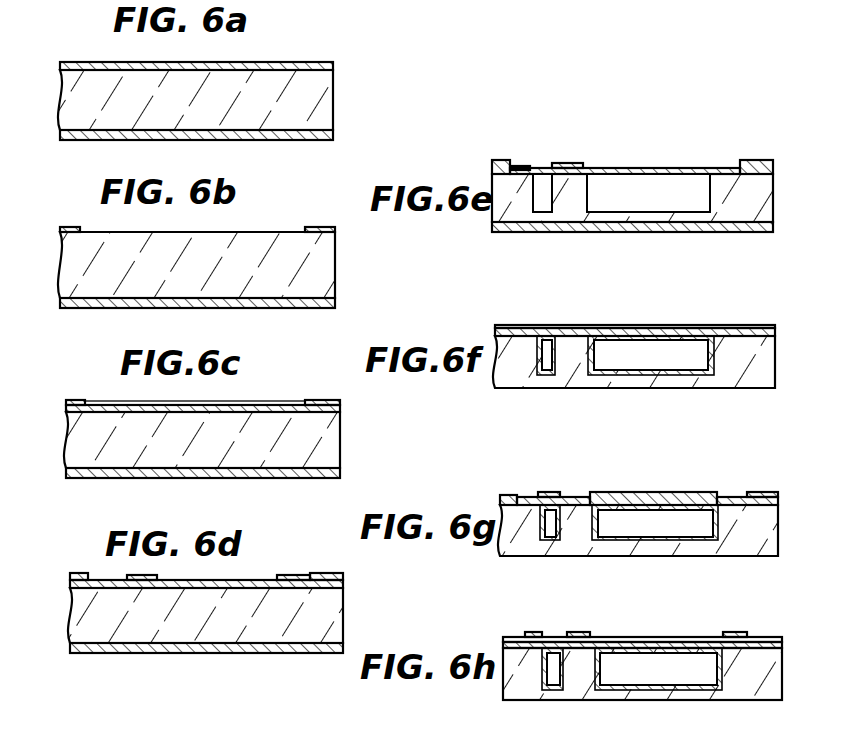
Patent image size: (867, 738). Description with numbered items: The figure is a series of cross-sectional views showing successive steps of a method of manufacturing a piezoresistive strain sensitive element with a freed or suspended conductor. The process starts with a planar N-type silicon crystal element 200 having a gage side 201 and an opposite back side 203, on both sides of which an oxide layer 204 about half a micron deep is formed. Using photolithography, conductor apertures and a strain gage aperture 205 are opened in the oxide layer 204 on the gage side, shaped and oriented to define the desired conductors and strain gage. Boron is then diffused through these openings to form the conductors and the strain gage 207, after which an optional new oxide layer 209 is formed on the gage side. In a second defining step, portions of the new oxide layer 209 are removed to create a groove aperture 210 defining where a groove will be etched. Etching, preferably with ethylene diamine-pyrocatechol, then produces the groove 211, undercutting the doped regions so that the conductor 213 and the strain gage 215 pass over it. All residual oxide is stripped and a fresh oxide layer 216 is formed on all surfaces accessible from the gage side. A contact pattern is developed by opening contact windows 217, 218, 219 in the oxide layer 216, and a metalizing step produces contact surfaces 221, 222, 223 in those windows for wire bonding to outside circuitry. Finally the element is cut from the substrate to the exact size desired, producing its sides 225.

In FIG. 6A, the silicon crystal element 200 is at (318, 90).
In FIG. 6B, the silicon crystal element 200 is at (330, 282).
In FIG. 6A, the gage side 201 is at (95, 66).
In FIG. 6A, the back side 203 is at (257, 132).
In FIG. 6A, the oxide layer 204 is at (186, 103).
In FIG. 6B, the oxide layer 204 is at (260, 308).
In FIG. 6C, the oxide layer 204 is at (270, 478).
In FIG. 6D, the oxide layer 204 is at (310, 653).
In FIG. 6E, the oxide layer 204 is at (752, 232).
In FIG. 6B, the conductor apertures and strain gage aperture 205 is at (240, 232).
In FIG. 6C, the conductors and strain gage 207 is at (105, 400).
In FIG. 6C, the new oxide layer 209 is at (247, 405).
In FIG. 6D, the groove aperture 210 is at (255, 578).
In FIG. 6E, the groove 211 is at (542, 212).
In FIG. 6E, the conductor 213 is at (688, 138).
In FIG. 6E, the strain gage 215 is at (542, 163).
In FIG. 6F, the oxide layer 216 is at (697, 326).
In FIG. 6G, the oxide layer 216 is at (512, 495).
In FIG. 6G, the contact window 217 is at (533, 492).
In FIG. 6G, the contact window 218 is at (575, 497).
In FIG. 6G, the contact window 219 is at (742, 497).
In FIG. 6H, the contact surface 221 is at (540, 633).
In FIG. 6H, the contact surface 222 is at (578, 633).
In FIG. 6H, the contact surface 223 is at (735, 632).
In FIG. 6H, the sides 225 is at (800, 632).